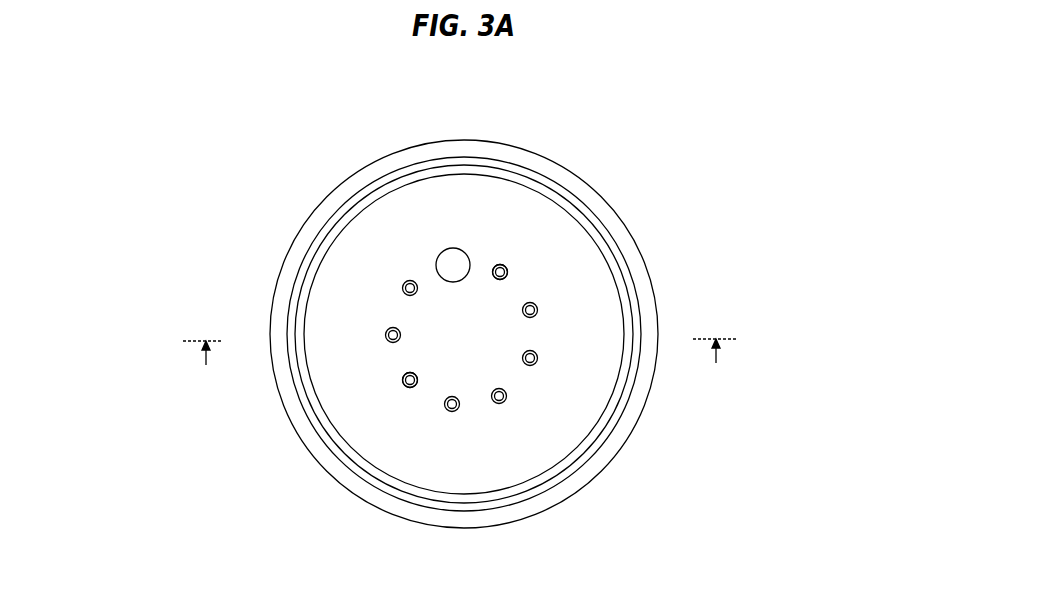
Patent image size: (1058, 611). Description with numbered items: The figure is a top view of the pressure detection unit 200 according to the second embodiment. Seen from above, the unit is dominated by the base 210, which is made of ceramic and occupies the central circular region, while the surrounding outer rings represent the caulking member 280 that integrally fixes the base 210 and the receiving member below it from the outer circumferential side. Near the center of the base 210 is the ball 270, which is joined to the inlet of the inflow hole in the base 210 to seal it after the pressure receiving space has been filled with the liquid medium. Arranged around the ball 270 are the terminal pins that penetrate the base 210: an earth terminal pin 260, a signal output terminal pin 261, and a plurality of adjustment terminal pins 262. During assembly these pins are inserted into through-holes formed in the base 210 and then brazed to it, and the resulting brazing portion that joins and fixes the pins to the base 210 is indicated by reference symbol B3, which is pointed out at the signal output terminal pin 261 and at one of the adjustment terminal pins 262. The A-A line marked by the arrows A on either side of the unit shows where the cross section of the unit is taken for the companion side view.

The pressure detection unit 200 is at (661, 181).
The base 210 is at (347, 252).
The earth terminal pin 260 is at (386, 332).
The signal output terminal pin 261 is at (407, 281).
The adjustment terminal pins 262 is at (537, 305).
The ball 270 is at (456, 258).
The caulking member 280 is at (638, 263).
The brazing portion B3 is at (500, 264).
The A-A line A is at (460, 362).